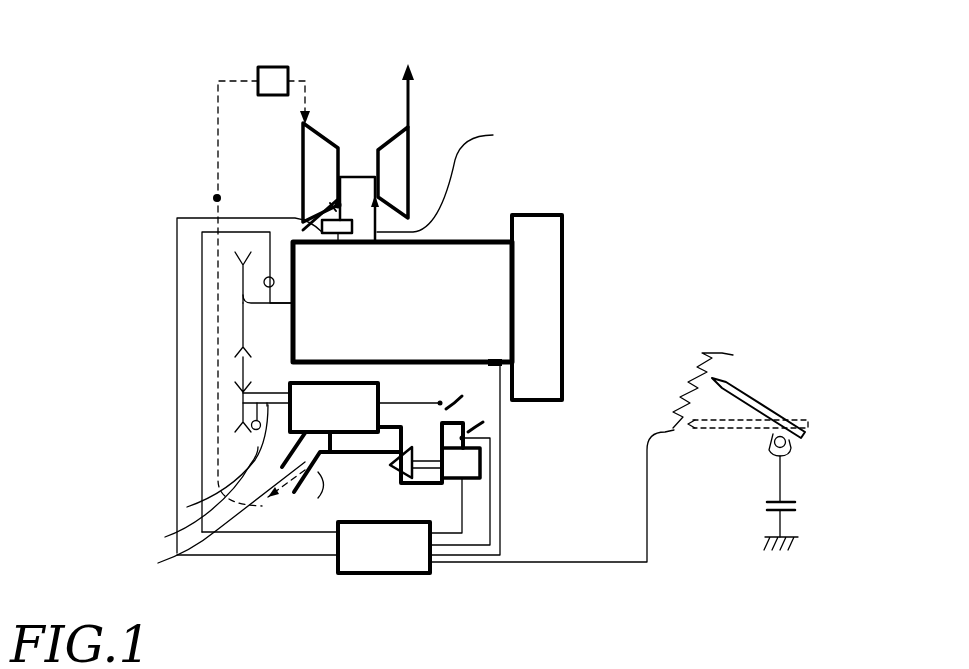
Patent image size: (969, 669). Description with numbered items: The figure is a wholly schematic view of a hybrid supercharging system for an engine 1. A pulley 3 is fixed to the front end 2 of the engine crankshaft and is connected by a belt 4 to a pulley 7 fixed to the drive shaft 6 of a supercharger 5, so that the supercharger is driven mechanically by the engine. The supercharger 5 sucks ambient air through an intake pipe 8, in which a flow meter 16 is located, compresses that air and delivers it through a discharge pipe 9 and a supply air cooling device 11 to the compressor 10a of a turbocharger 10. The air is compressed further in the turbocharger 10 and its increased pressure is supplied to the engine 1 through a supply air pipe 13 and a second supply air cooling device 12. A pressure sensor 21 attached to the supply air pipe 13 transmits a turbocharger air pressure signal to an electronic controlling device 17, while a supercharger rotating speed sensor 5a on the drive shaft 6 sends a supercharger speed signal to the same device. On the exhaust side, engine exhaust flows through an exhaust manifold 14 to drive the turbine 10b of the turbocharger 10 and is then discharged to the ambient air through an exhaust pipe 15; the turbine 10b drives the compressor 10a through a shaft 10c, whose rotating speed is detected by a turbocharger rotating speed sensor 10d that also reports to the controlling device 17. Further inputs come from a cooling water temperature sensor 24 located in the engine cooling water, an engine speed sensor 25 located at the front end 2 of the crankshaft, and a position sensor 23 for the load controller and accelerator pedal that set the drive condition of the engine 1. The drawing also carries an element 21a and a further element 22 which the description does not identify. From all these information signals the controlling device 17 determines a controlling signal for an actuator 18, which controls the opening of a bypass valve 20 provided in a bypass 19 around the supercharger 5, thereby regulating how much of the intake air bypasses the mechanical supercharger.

The engine 1 is at (471, 242).
The front end of crank shaft 2 is at (247, 299).
The pulley 3 is at (242, 322).
The belt 4 is at (240, 367).
The supercharger 5 is at (242, 395).
The supercharger rotating speed sensor 5a is at (240, 430).
The drive shaft 6 is at (187, 507).
The pulley 7 is at (242, 412).
The intake pipe 8 is at (462, 393).
The discharge pipe 9 is at (199, 504).
The turbocharger 10 is at (355, 125).
The compressor 10a is at (303, 152).
The turbine 10b is at (400, 160).
The shaft 10c is at (413, 127).
The turbocharger rotating speed sensor 10d is at (345, 176).
The supply air cooling device 11 is at (258, 74).
The supply air cooling device 12 is at (300, 219).
The supply air pipe 13 is at (318, 221).
The exhaust manifold 14 is at (452, 178).
The exhaust pipe 15 is at (410, 105).
The flow meter 16 is at (485, 418).
The electronic controlling device 17 is at (357, 573).
The actuator 18 is at (470, 480).
The bypass 19 is at (215, 530).
The bypass valve 20 is at (390, 465).
The pressure sensor 21 is at (335, 201).
The pivot 21a is at (214, 196).
The accelerator lever 22 is at (789, 422).
The position sensor 23 is at (713, 373).
The cooling water temperature sensor 24 is at (493, 359).
The engine speed sensor 25 is at (245, 285).